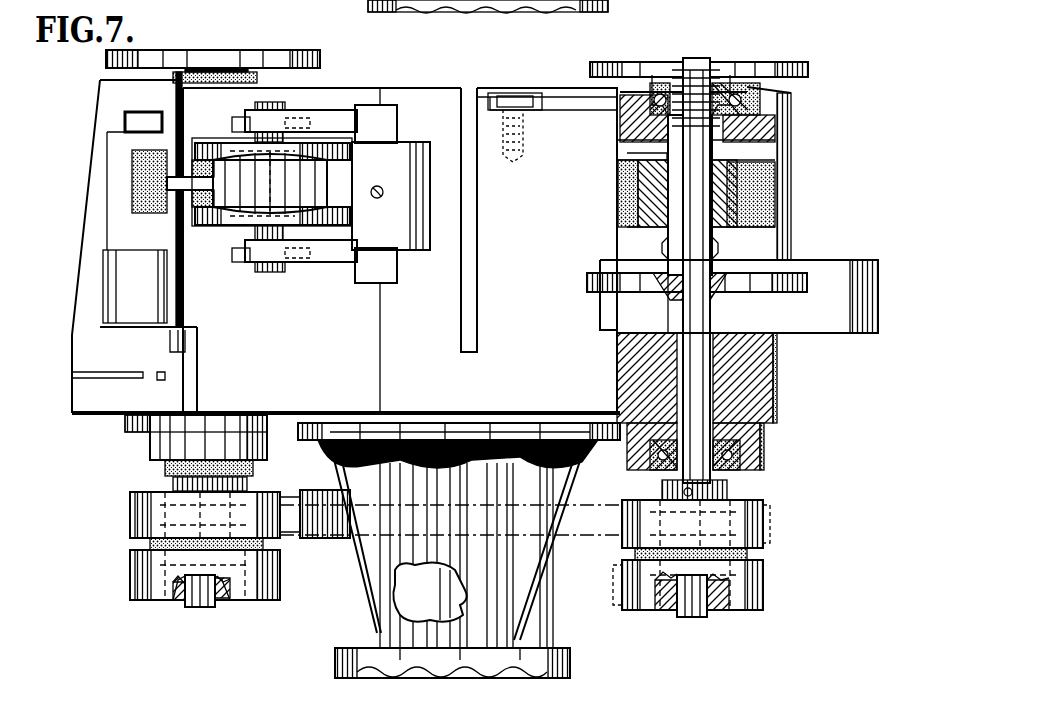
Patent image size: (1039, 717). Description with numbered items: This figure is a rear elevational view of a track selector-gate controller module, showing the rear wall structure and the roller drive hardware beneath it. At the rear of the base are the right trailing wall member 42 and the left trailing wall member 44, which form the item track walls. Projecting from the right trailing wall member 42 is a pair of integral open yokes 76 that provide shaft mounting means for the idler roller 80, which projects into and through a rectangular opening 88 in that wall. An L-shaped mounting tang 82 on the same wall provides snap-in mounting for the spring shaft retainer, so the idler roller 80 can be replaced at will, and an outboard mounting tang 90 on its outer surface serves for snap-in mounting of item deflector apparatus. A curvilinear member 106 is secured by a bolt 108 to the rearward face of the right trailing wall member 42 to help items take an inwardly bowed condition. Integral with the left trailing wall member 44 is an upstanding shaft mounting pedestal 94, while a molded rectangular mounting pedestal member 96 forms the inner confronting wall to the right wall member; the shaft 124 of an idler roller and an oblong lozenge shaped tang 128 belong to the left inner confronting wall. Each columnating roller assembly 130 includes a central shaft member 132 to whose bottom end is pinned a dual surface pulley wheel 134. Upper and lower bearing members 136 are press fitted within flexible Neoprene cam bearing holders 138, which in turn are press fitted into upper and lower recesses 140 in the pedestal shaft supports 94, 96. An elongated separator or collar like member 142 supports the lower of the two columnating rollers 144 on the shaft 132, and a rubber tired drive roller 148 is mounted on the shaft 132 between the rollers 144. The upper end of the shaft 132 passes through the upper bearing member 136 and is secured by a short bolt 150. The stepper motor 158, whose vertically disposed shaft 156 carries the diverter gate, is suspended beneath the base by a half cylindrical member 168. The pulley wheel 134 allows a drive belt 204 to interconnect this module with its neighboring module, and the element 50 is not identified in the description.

The right trailing wall member 42 is at (428, 323).
The left trailing wall member 44 is at (521, 233).
The slot 50 is at (470, 153).
The open yokes 76 is at (240, 124).
The idler roller 80 is at (309, 205).
The L-shaped mounting tang 82 is at (408, 227).
The rectangular opening 88 is at (192, 199).
The outboard mounting tang 90 is at (151, 302).
The shaft mounting pedestal 94 is at (790, 196).
The mounting pedestal member 96 is at (82, 303).
The curvilinear member 106 is at (197, 185).
The bolt 108 is at (532, 62).
The shaft 124 is at (283, 104).
The oblong lozenge shaped tang 128 is at (878, 318).
The columnating roller assembly 130 is at (457, 156).
The central shaft member 132 is at (697, 178).
The dual surface pulley wheel 134 is at (155, 545).
The bearing members 136 is at (770, 108).
The flexible Neoprene cam bearing holder 138 is at (180, 75).
The recesses 140 is at (775, 118).
The separator or collar like member 142 is at (717, 405).
The columnating rollers 144 is at (232, 60).
The rubber tired drive roller 148 is at (175, 185).
The short bolt 150 is at (714, 32).
The shaft of stepper motor 156 is at (429, 591).
The stepper motor 158 is at (607, 12).
The half cylindrical member 168 is at (397, 630).
The drive belt 204 is at (291, 537).